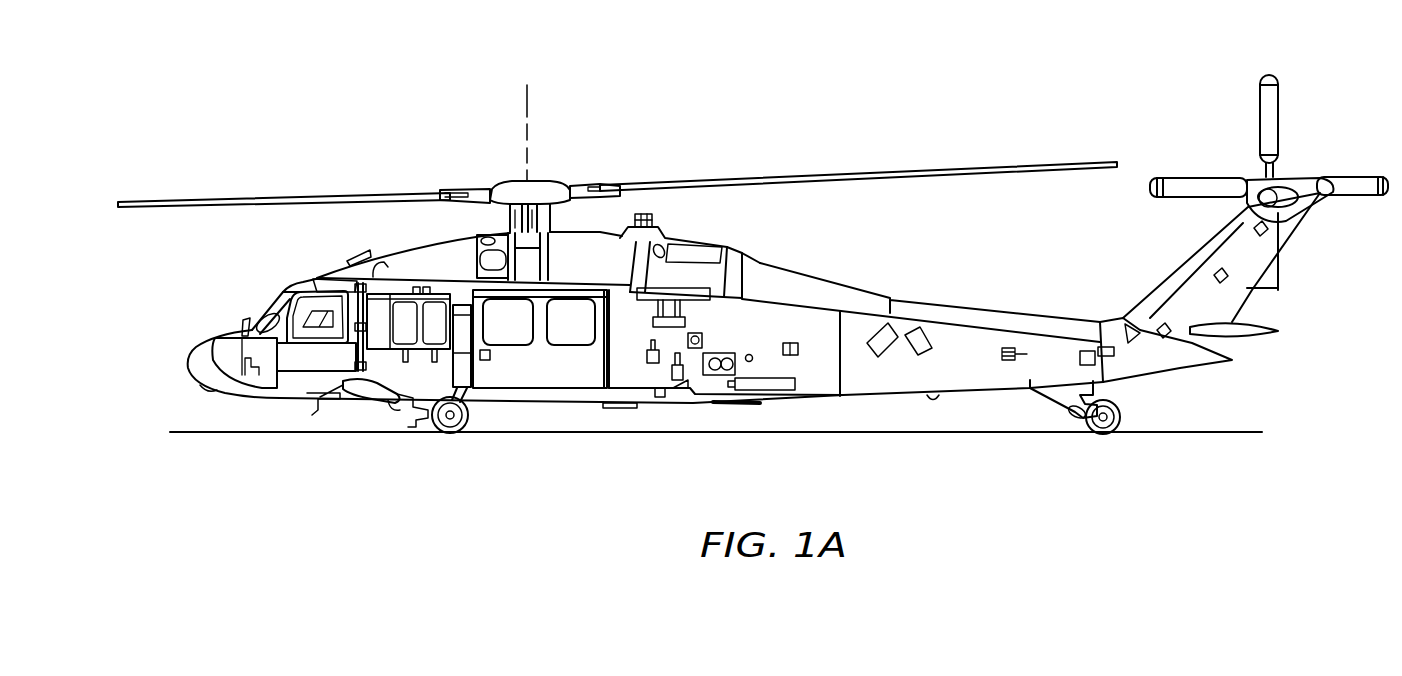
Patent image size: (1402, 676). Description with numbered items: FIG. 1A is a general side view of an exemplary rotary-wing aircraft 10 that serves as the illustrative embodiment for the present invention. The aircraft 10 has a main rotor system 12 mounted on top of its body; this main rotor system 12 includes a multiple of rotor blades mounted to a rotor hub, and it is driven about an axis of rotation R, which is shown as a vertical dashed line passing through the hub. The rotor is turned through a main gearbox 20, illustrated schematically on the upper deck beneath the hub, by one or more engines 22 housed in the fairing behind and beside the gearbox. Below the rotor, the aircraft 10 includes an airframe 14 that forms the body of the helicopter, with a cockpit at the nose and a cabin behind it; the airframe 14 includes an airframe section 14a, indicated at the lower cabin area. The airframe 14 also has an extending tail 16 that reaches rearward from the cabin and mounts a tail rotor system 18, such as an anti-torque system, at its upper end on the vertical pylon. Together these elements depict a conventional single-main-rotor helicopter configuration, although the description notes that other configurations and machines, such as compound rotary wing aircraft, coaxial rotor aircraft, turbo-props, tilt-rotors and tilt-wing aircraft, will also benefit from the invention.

The rotary-wing aircraft 10 is at (875, 97).
The main rotor system 12 is at (574, 146).
The airframe 14 is at (694, 418).
The airframe section 14a is at (539, 399).
The extending tail 16 is at (858, 390).
The tail rotor system 18 is at (1288, 129).
The main gearbox 20 is at (487, 237).
The engine 22 is at (597, 250).
The axis of rotation R is at (527, 112).